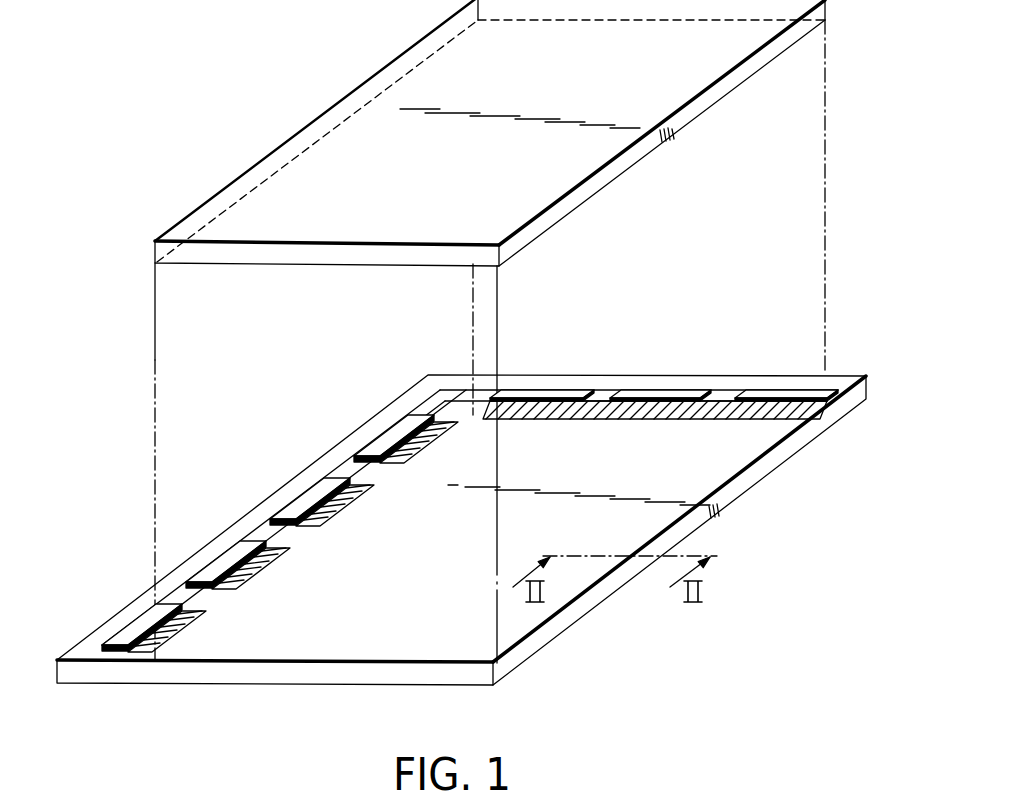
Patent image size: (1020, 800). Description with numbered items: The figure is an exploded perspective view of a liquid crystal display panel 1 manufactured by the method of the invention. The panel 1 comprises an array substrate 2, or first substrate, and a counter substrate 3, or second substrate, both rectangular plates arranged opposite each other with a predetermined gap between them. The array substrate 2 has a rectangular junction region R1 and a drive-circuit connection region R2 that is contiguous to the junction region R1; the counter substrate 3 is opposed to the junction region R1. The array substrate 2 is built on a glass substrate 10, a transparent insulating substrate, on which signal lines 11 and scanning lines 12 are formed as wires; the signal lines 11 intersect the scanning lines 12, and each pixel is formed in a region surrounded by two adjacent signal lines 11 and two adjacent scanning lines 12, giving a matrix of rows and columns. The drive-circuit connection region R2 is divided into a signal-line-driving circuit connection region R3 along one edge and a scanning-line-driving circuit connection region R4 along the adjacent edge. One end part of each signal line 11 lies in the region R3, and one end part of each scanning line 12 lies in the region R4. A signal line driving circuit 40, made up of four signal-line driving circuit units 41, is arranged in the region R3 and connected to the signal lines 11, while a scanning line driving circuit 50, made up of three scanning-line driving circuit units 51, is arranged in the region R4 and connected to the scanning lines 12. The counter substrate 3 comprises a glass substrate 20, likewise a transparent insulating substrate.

The liquid crystal display panel 1 is at (195, 75).
The counter substrate 3 is at (348, 66).
The glass substrate 20 is at (316, 118).
The array substrate 2 is at (583, 648).
The glass substrate 10 is at (747, 496).
The signal line driving circuit 40 is at (282, 420).
The signal-line driving circuit unit 41 is at (297, 507).
The signal line 11 is at (195, 625).
The scanning line driving circuit 50 is at (588, 328).
The scanning-line driving circuit unit 51 is at (622, 390).
The scanning line 12 is at (560, 415).
The junction region R1 is at (413, 650).
The drive-circuit connection region R2 is at (423, 381).
The signal-line-driving circuit connection region R3 is at (378, 417).
The scanning-line-driving circuit connection region R4 is at (534, 372).